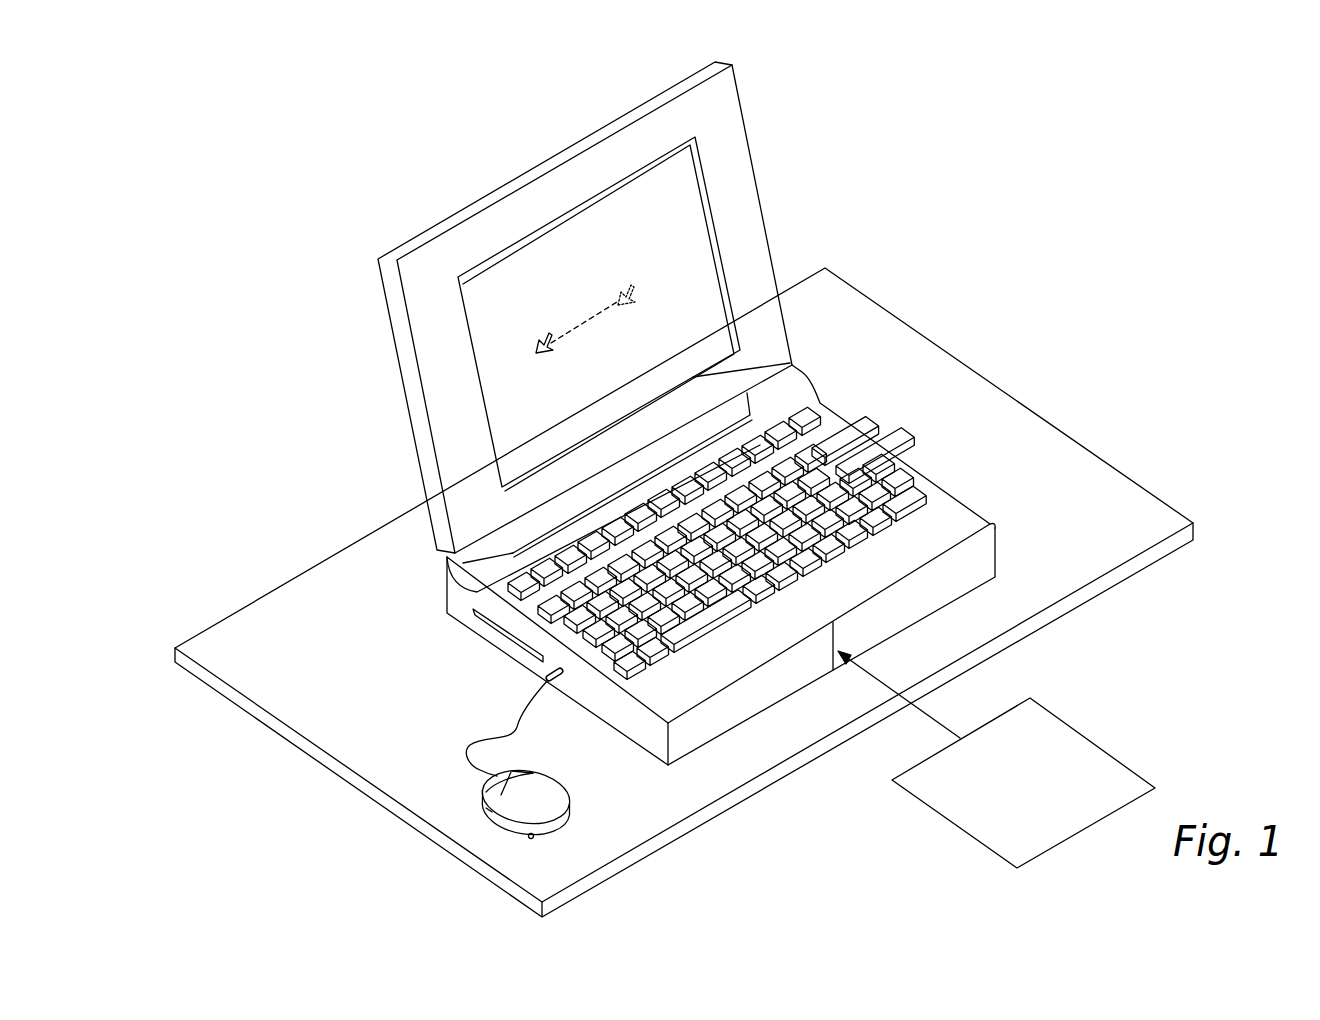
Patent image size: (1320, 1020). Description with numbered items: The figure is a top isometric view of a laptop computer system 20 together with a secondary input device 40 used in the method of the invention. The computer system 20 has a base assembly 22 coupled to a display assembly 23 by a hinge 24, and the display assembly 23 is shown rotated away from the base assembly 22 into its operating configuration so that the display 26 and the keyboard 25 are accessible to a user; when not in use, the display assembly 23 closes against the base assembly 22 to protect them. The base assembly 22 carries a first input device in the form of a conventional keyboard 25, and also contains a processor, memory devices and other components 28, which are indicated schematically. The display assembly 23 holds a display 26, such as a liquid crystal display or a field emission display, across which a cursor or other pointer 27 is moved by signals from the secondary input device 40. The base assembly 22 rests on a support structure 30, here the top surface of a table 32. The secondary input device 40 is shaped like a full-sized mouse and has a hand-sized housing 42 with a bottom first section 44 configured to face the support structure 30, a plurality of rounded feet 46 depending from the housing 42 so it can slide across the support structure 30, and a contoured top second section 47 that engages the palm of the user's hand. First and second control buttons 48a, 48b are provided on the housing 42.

The laptop computer system 20 is at (297, 364).
The base assembly 22 is at (958, 512).
The display assembly 23 is at (760, 214).
The hinge 24 is at (532, 522).
The keyboard 25 is at (863, 450).
The display 26 is at (487, 276).
The cursor or other pointer 27 is at (537, 336).
The components 28 is at (1093, 743).
The support structure 30 is at (775, 752).
The table 32 is at (688, 833).
The secondary input device 40 is at (431, 758).
The housing 42 is at (572, 806).
The first section 44 is at (553, 828).
The feet 46 is at (489, 812).
The second section 47 is at (546, 790).
The first control button 48a is at (490, 787).
The second control button 48b is at (517, 776).